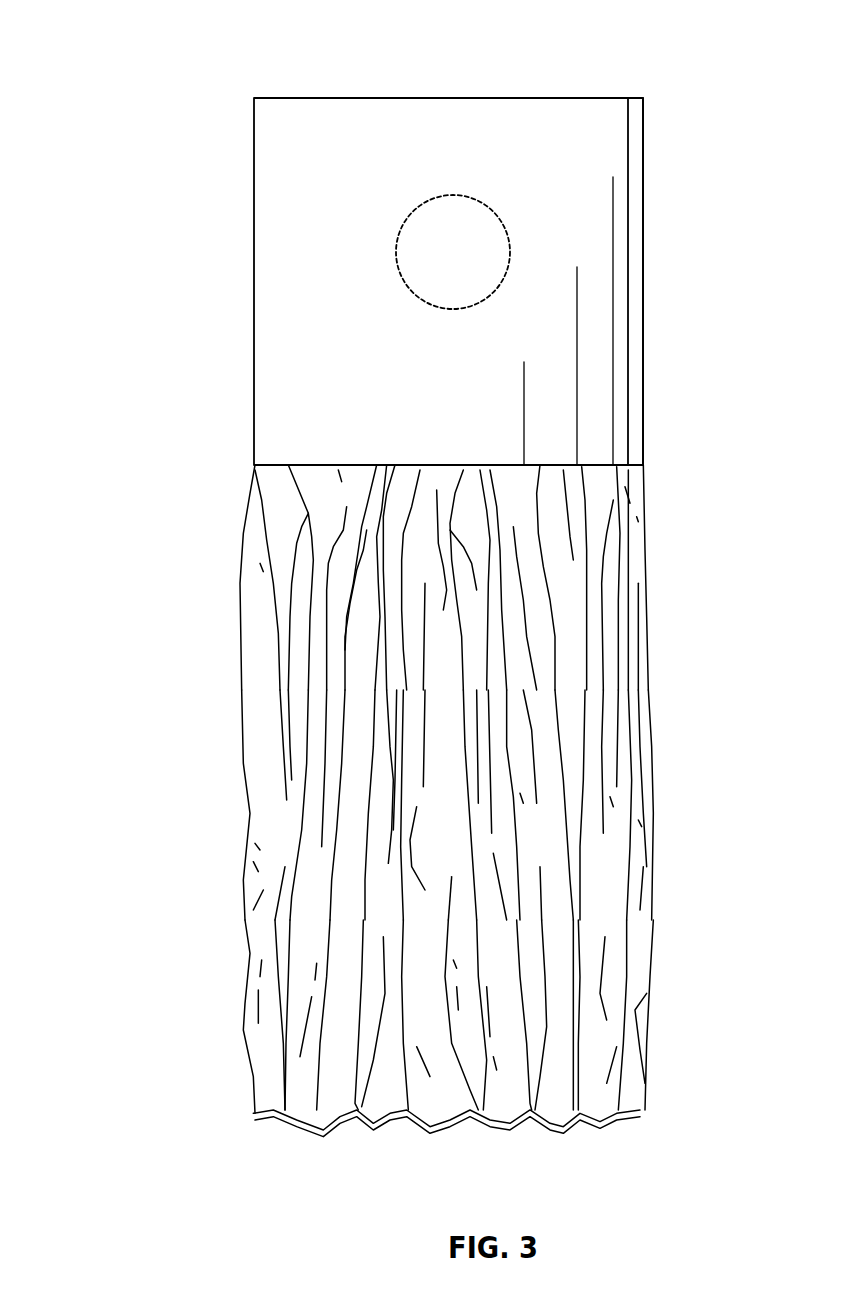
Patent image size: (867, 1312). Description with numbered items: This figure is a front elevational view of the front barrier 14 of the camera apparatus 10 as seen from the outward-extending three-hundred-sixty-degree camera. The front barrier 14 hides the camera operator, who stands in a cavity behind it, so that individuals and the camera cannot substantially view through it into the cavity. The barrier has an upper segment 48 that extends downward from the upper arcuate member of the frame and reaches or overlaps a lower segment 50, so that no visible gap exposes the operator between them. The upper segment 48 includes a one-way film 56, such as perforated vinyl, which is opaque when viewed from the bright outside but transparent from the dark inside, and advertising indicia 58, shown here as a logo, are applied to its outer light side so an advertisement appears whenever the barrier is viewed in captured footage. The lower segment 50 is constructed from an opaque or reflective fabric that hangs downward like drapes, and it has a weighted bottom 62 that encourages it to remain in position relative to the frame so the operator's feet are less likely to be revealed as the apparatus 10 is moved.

The camera apparatus 10 is at (789, 54).
The front barrier 14 is at (126, 385).
The upper segment 48 is at (636, 400).
The one-way film 56 is at (635, 281).
The advertising indicia 58 is at (497, 226).
The lower segment 50 is at (638, 642).
The weighted bottom 62 is at (643, 1113).